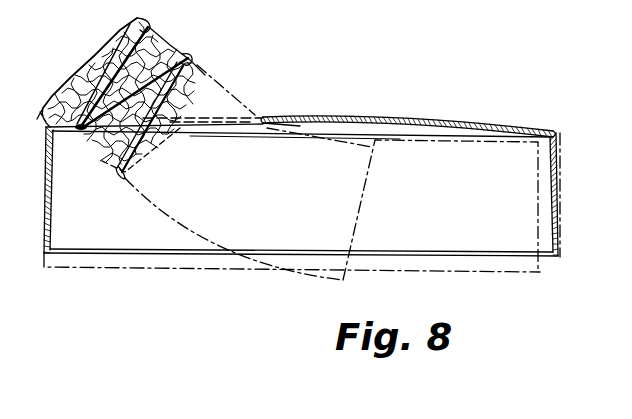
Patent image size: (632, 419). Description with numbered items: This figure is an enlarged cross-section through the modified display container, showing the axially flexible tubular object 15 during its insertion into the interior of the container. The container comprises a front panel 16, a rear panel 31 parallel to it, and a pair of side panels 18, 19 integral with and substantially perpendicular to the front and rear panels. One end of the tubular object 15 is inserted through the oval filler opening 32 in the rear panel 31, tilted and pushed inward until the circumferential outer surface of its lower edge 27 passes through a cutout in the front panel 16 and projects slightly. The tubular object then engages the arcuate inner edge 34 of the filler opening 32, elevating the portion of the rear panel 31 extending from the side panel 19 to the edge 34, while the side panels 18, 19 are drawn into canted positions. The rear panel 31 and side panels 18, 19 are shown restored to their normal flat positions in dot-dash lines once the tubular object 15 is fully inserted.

The tubular object 15 is at (193, 56).
The front panel 16 is at (62, 1).
The side panel 18 is at (44, 220).
The side panel 19 is at (559, 181).
The lower edge 27 is at (386, 199).
The rear panel 31 is at (319, 111).
The filler opening 32 is at (267, 110).
The arcuate inner edge 34 is at (268, 124).